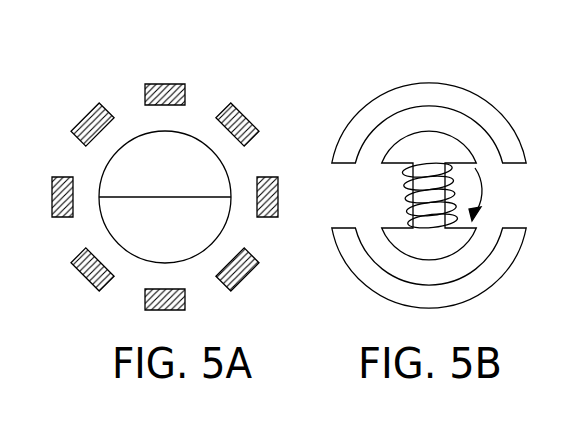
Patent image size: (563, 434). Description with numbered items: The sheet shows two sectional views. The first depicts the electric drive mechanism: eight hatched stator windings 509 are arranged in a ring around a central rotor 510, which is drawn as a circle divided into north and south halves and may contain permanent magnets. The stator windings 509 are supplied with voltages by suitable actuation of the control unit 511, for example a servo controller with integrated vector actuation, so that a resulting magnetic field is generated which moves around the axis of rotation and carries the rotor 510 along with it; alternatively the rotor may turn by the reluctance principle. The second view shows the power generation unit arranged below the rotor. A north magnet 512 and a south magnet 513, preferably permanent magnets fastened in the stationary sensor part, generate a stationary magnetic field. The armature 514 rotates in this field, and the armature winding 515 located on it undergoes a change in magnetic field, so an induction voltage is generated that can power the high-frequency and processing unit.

In FIG. 5A, the stator windings 509 is at (83, 110).
In FIG. 5A, the rotor 510 is at (134, 247).
In FIG. 5A, the control unit 511 is at (264, 428).
In FIG. 5B, the magnet 512 is at (488, 104).
In FIG. 5B, the magnet 513 is at (358, 265).
In FIG. 5B, the armature 514 is at (445, 190).
In FIG. 5B, the armature winding 515 is at (408, 174).